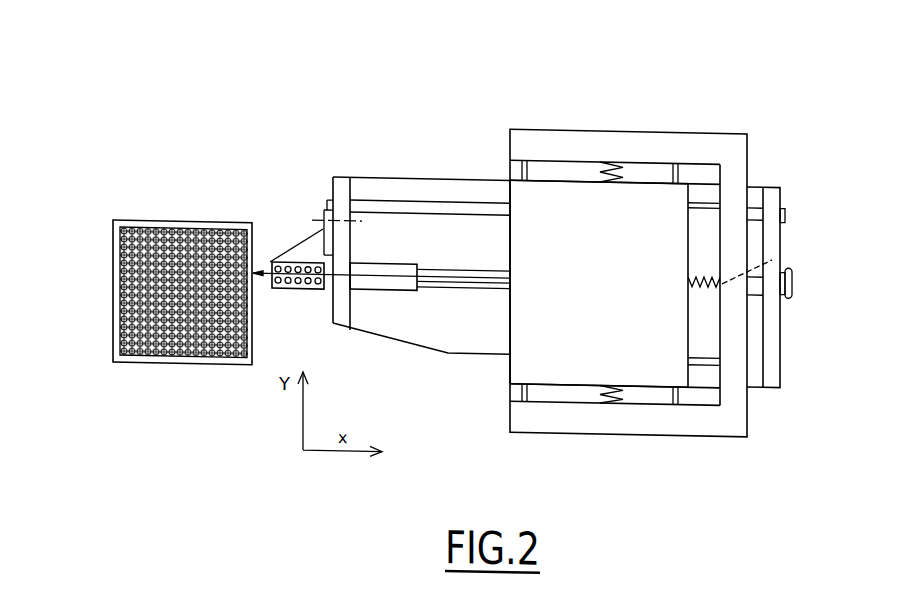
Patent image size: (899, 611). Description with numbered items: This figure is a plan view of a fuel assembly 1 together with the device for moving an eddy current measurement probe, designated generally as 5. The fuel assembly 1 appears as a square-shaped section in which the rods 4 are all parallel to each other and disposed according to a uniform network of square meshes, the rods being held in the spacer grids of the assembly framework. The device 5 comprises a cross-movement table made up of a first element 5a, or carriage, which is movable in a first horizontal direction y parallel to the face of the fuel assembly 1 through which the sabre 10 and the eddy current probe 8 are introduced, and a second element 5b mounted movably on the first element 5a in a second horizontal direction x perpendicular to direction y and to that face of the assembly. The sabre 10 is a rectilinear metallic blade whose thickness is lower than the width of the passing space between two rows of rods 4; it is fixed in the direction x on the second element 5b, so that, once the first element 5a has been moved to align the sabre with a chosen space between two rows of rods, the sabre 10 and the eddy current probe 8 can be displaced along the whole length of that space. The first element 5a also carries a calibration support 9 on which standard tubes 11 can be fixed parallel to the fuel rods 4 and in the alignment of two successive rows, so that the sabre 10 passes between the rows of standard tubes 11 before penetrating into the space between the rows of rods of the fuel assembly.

The fuel assembly 1 is at (108, 300).
The rods 4 is at (203, 227).
The device for moving an eddy current measurement probe 5 is at (703, 110).
The first element 5a is at (397, 326).
The second element 5b is at (667, 433).
The eddy current probe 8 is at (268, 267).
The calibration support 9 is at (310, 252).
The sabre 10 is at (383, 266).
The standard tubes 11 is at (308, 293).